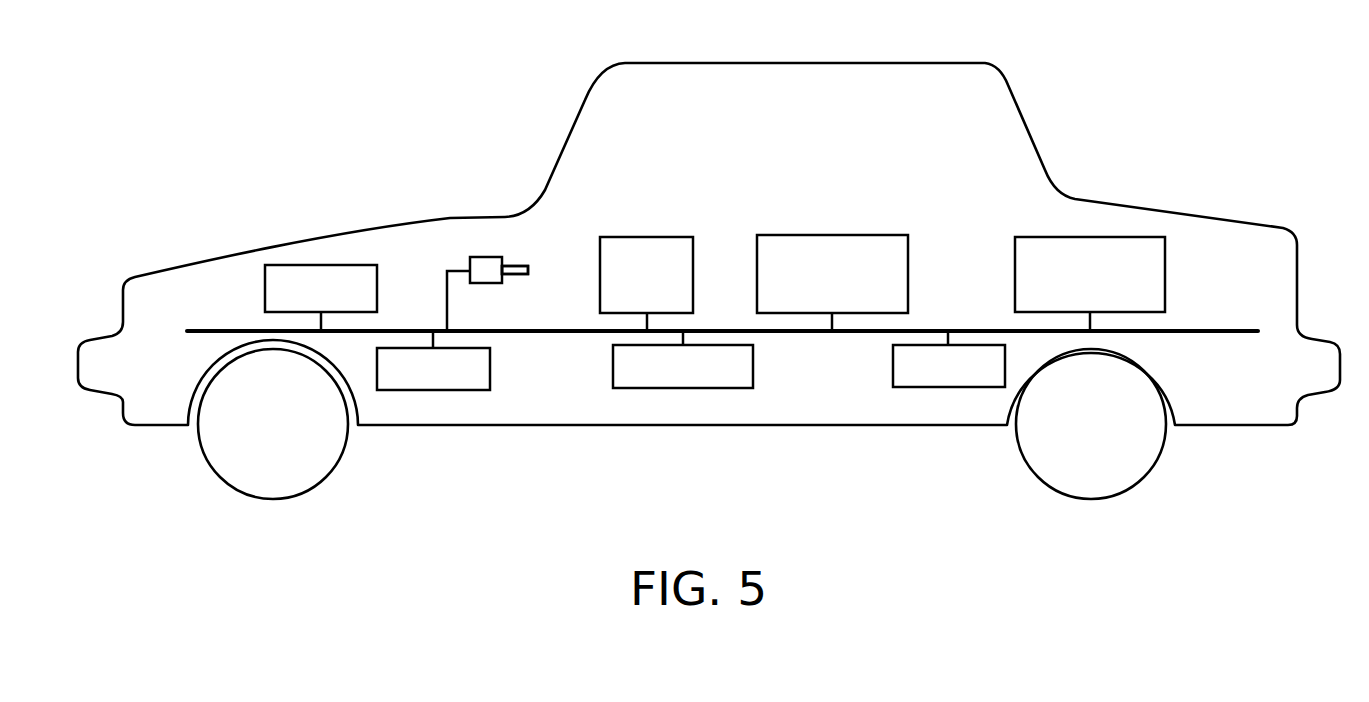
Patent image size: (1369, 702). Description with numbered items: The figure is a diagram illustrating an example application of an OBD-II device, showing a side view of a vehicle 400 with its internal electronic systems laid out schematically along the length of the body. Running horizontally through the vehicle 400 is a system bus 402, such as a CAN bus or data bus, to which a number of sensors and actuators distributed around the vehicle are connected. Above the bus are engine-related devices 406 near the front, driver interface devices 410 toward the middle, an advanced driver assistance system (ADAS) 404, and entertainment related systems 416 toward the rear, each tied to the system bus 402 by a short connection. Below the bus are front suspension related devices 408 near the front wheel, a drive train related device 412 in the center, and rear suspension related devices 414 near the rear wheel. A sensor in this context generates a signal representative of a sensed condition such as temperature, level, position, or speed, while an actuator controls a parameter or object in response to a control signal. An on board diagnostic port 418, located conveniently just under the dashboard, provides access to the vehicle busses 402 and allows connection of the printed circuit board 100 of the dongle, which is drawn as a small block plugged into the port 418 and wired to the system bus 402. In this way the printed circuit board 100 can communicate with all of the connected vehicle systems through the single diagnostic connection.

The printed circuit board 100 is at (510, 265).
The vehicle 400 is at (683, 62).
The system bus 402 is at (242, 328).
The advanced driver assistance system 404 is at (823, 233).
The engine-related devices 406 is at (315, 262).
The front suspension related devices 408 is at (445, 390).
The driver interface devices 410 is at (638, 233).
The drive train related device 412 is at (700, 388).
The rear suspension related devices 414 is at (947, 388).
The entertainment related systems 416 is at (1082, 235).
The on board diagnostic port 418 is at (485, 283).